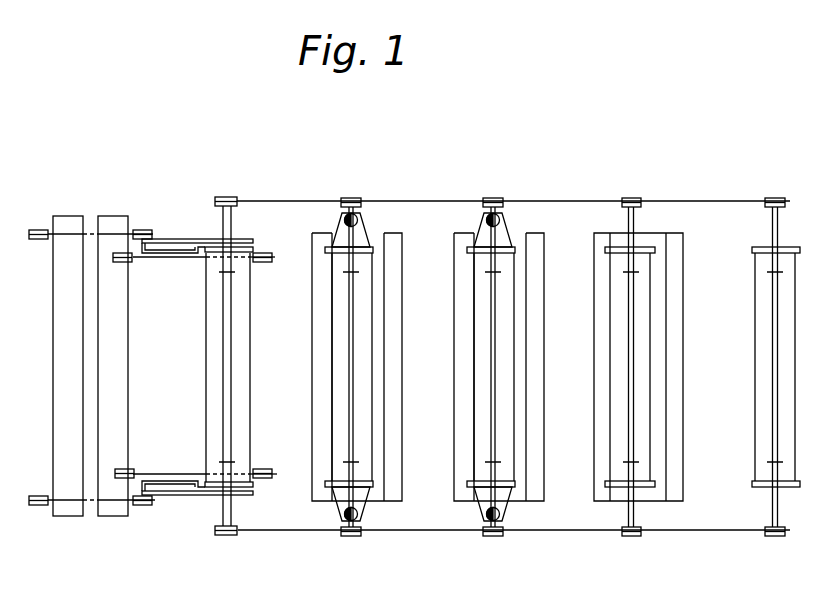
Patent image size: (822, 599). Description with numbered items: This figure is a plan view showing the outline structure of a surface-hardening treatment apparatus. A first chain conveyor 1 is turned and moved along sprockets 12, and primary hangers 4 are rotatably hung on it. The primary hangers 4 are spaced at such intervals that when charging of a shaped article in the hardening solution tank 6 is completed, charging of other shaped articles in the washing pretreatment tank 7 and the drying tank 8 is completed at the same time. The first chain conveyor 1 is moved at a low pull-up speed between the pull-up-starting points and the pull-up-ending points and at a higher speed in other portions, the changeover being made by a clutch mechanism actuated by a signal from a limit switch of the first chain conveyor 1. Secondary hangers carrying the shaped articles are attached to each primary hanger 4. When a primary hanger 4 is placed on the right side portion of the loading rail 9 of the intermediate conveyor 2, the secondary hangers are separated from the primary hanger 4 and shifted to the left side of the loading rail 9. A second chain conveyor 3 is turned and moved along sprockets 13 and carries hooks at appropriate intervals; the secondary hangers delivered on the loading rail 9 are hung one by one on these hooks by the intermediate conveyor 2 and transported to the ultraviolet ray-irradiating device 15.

The first chain conveyor 1 is at (441, 200).
The intermediate conveyor 2 is at (172, 474).
The second chain conveyor 3 is at (91, 502).
The primary hanger 4 is at (372, 482).
The hardening solution tank 6 is at (385, 385).
The washing pretreatment tank 7 is at (528, 388).
The drying tank 8 is at (668, 389).
The loading rail 9 is at (176, 496).
The sprocket 12 is at (230, 536).
The sprocket 13 is at (38, 505).
The ultraviolet ray-irradiating device 15 is at (83, 343).